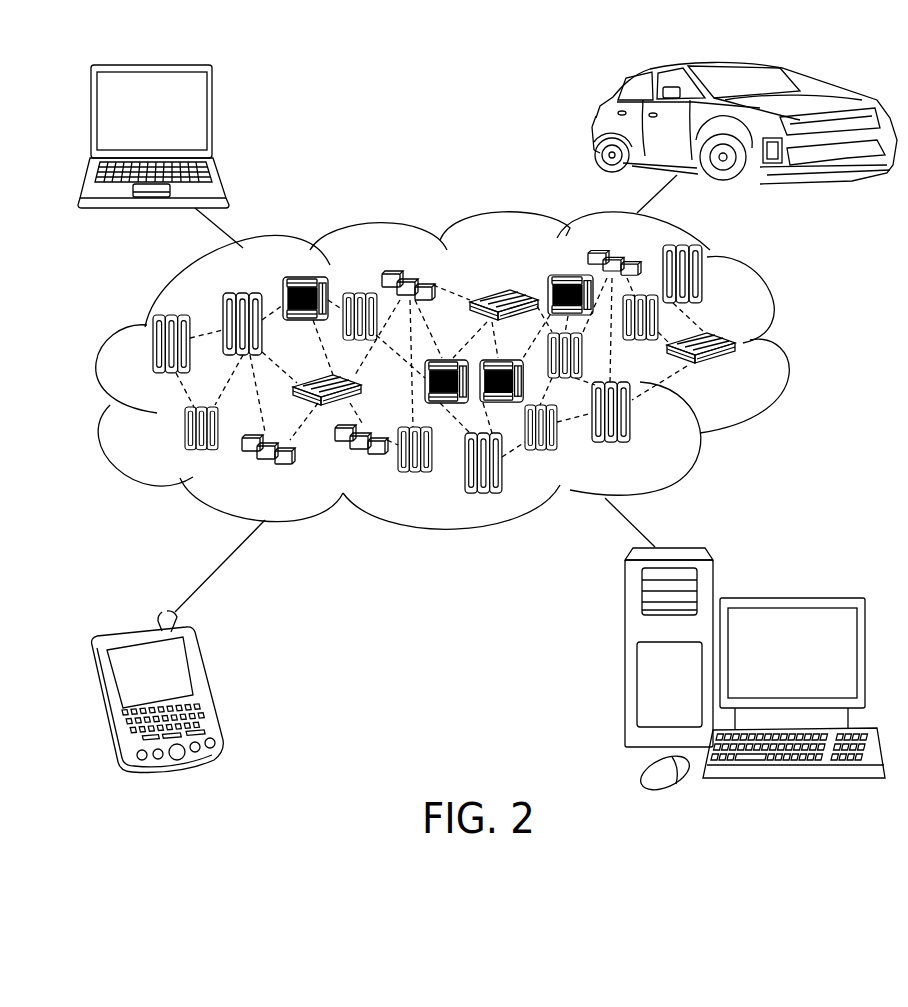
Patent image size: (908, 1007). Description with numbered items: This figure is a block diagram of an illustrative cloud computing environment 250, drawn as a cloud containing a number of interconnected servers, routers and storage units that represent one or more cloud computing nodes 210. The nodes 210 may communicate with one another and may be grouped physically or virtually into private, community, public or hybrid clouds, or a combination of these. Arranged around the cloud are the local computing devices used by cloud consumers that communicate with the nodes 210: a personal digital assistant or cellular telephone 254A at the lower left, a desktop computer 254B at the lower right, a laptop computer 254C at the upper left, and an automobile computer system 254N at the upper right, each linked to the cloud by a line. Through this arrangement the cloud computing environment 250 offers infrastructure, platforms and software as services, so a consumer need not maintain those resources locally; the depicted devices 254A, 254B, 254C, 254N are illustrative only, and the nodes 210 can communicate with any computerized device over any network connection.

The cloud computing nodes 210 is at (502, 369).
The cloud computing environment 250 is at (788, 350).
The personal digital assistant or cellular telephone 254A is at (212, 683).
The desktop computer 254B is at (790, 597).
The laptop computer 254C is at (213, 118).
The automobile computer system 254N is at (595, 130).